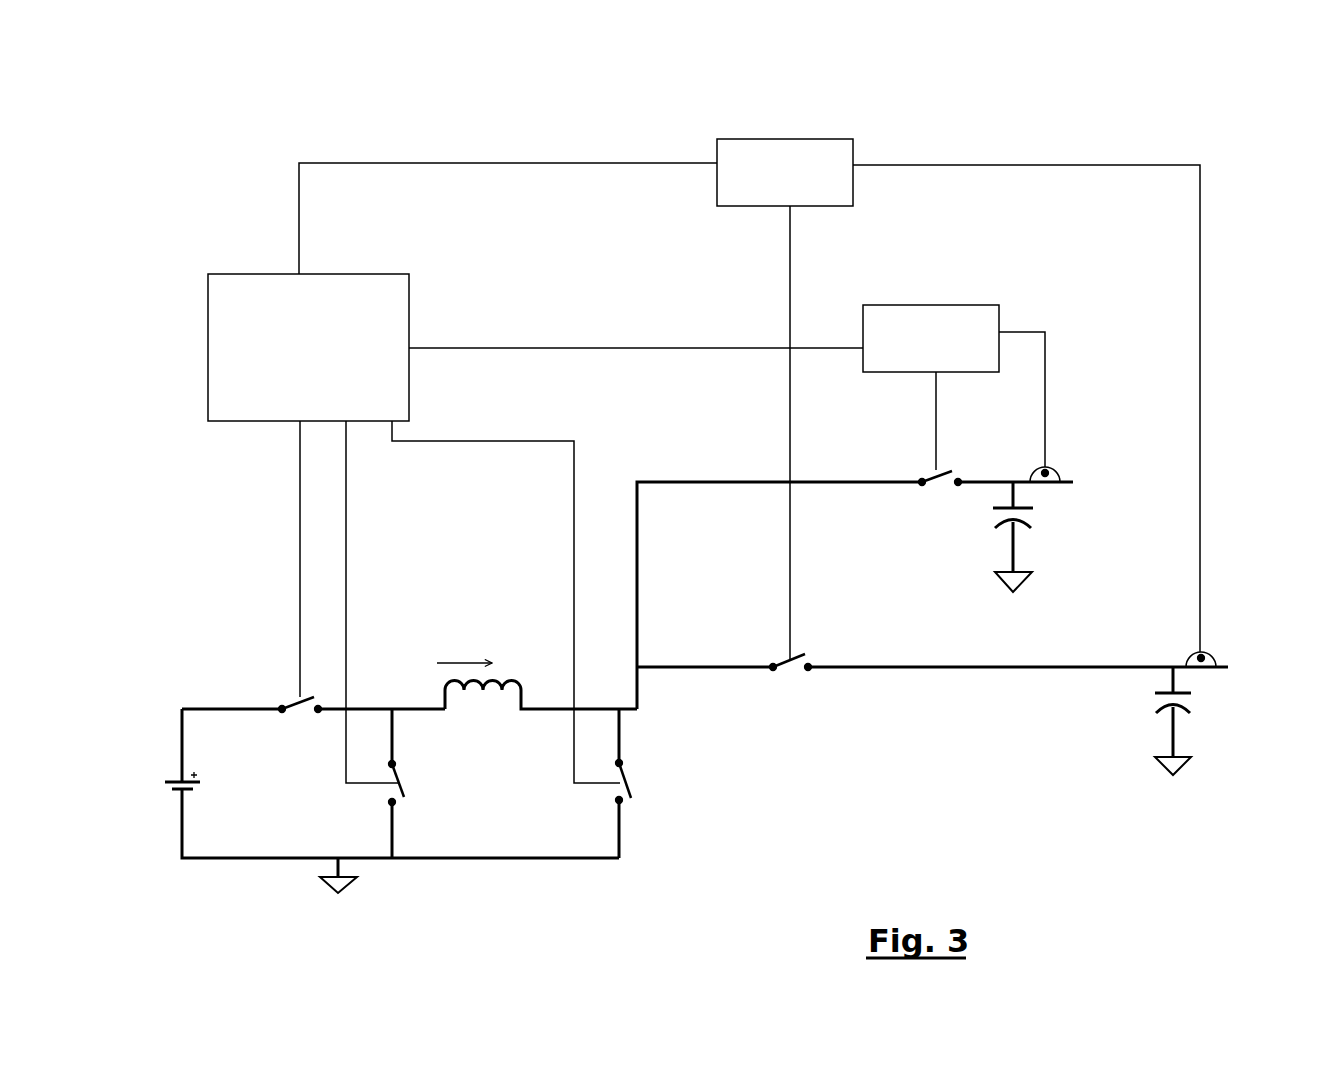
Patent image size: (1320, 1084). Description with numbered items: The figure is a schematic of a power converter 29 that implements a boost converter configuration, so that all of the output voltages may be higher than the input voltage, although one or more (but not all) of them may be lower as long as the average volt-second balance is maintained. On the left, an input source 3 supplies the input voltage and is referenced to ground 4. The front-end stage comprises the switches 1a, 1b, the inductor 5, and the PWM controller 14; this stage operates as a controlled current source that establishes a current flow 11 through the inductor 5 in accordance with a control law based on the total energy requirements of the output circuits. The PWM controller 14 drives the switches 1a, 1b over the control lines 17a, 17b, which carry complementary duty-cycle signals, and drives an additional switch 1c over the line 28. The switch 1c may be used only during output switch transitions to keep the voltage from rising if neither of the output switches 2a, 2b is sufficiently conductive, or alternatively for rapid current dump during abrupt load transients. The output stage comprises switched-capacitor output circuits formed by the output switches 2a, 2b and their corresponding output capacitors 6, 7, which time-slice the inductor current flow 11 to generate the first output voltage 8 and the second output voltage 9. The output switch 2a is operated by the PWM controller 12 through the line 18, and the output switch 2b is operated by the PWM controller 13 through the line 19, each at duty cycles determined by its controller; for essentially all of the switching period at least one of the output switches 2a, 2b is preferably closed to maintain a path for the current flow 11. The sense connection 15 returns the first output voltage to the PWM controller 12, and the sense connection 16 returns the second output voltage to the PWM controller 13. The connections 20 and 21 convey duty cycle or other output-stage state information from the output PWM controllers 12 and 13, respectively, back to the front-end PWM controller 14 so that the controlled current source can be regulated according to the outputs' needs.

The power converter 29 is at (275, 78).
The PWM controller 14 is at (262, 258).
The PWM controller 13 is at (766, 128).
The output PWM controller 12 is at (933, 292).
The control line from PWM 2b controller 21 is at (505, 161).
The control line from PWM 2a controller 20 is at (688, 343).
The control line to switch 2b 19 is at (788, 552).
The control line to switch 2a 18 is at (940, 393).
The control line to switch 1c 28 is at (551, 438).
The V1 sense line 15 is at (1043, 328).
The V2 sense line 16 is at (1210, 377).
The control line D1 to switch 1a 17a is at (297, 572).
The control line 1-D1 to switch 1b 17b is at (356, 525).
The input voltage source Vin 3 is at (172, 740).
The switch 1a is at (279, 689).
The switch 1b is at (414, 803).
The switch 1c is at (640, 803).
The ground 4 is at (357, 885).
The inductor 5 is at (493, 720).
The current flow 11 is at (480, 628).
The output switch 2a is at (915, 465).
The output switch 2b is at (769, 648).
The output voltage V1 8 is at (1086, 496).
The output voltage V2 9 is at (1238, 688).
The output capacitor 6 is at (1041, 533).
The output capacitor 7 is at (1196, 727).